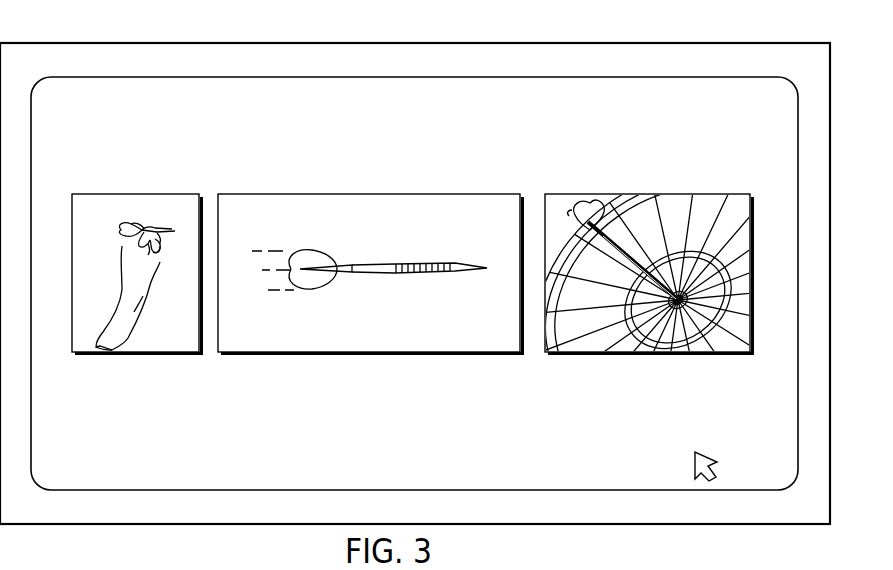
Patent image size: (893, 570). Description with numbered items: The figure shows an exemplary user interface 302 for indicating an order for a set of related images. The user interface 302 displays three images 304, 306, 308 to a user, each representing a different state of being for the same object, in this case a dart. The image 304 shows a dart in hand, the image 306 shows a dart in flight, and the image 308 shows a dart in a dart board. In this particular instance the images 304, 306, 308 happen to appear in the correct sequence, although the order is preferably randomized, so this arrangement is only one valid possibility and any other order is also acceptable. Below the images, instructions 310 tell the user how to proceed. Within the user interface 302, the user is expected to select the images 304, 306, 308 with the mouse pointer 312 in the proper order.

The user interface 302 is at (165, 43).
The image 304 is at (160, 193).
The image 306 is at (364, 193).
The image 308 is at (610, 193).
The instructions 310 is at (538, 388).
The mouse pointer 312 is at (691, 462).